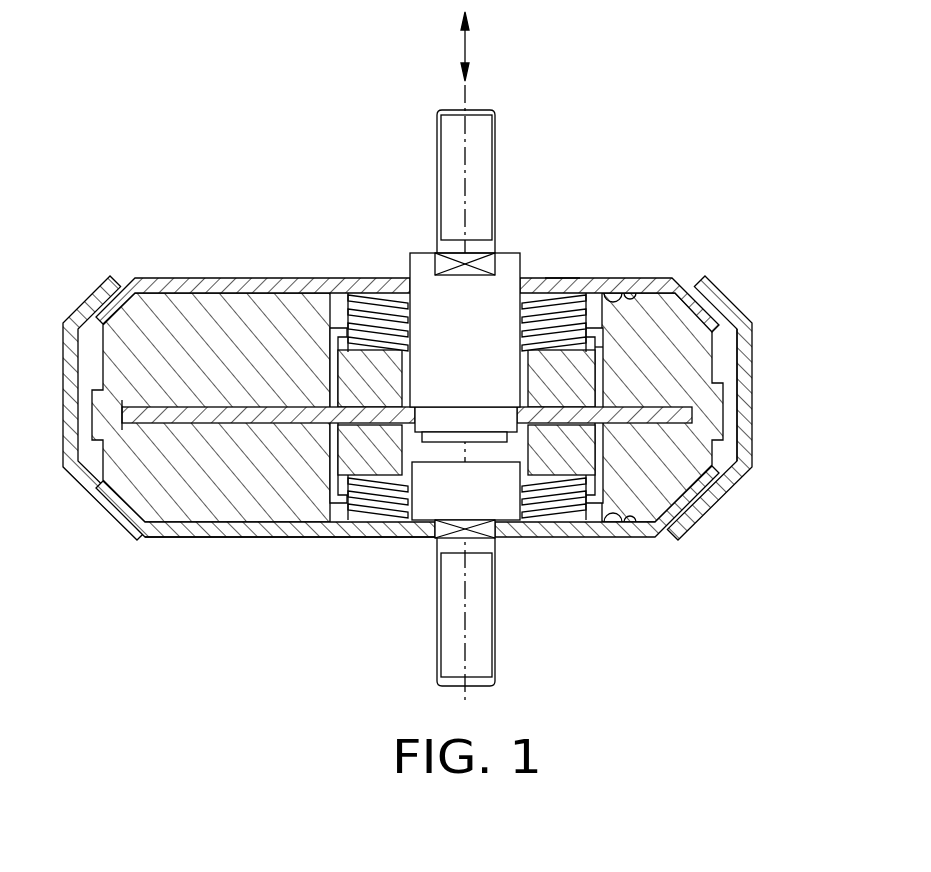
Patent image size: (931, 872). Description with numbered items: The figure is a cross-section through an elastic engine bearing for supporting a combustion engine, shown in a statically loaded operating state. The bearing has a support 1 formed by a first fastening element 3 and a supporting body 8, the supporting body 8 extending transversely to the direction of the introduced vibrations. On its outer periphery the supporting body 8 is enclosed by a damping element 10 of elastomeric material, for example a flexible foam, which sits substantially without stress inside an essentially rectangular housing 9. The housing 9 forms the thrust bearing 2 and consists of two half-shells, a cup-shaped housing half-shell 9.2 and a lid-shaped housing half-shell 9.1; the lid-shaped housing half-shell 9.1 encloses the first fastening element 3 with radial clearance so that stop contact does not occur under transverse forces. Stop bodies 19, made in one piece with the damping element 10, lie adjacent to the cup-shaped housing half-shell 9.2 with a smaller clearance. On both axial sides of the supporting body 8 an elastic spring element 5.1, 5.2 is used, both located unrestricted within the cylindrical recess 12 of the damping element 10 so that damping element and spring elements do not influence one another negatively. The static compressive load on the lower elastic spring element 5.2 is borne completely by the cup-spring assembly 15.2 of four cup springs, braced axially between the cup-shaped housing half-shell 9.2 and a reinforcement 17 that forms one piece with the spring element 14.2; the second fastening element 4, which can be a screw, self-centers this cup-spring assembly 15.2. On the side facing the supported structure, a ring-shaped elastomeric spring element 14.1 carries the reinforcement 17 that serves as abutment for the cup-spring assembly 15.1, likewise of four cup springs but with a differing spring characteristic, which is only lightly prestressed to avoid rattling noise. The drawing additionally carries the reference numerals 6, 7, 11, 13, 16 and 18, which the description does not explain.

The support 1 is at (427, 278).
The thrust bearing 2 is at (226, 532).
The first fastening element 3 is at (467, 160).
The second fastening element 4 is at (456, 630).
The elastic spring element 5.1 is at (575, 278).
The elastic spring element 5.2 is at (335, 505).
The right body block 6 is at (725, 359).
The axial movement direction 7 is at (468, 48).
The supporting body 8 is at (147, 455).
The housing 9 is at (754, 492).
The lid-shaped housing half-shell 9.1 is at (237, 278).
The cup-shaped housing half-shell 9.2 is at (708, 500).
The damping element 10 is at (193, 337).
The holes 11 is at (645, 278).
The cylindrical recess 12 is at (448, 455).
The bearings 13 is at (143, 407).
The ring-shaped spring element 14.1 is at (565, 387).
The spring element 14.2 is at (368, 443).
The cup-spring assembly 15.1 is at (350, 340).
The cup-spring assembly 15.2 is at (537, 508).
The spring seat 16 is at (352, 318).
The reinforcement 17 is at (560, 276).
The plate edge 18 is at (597, 347).
The stop bodies 19 is at (753, 423).